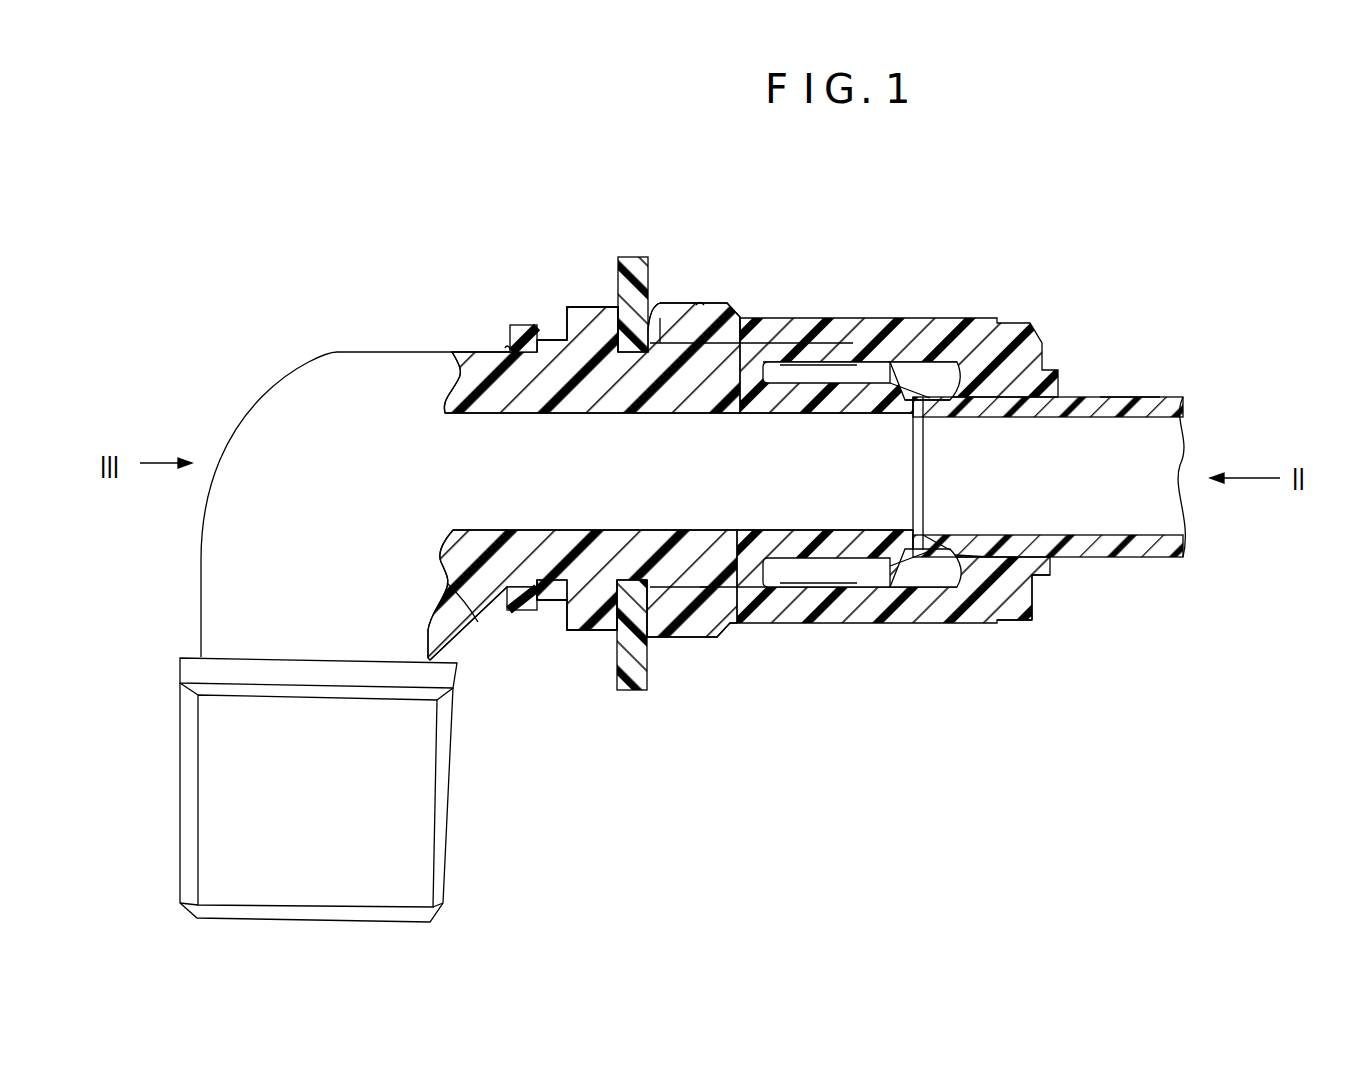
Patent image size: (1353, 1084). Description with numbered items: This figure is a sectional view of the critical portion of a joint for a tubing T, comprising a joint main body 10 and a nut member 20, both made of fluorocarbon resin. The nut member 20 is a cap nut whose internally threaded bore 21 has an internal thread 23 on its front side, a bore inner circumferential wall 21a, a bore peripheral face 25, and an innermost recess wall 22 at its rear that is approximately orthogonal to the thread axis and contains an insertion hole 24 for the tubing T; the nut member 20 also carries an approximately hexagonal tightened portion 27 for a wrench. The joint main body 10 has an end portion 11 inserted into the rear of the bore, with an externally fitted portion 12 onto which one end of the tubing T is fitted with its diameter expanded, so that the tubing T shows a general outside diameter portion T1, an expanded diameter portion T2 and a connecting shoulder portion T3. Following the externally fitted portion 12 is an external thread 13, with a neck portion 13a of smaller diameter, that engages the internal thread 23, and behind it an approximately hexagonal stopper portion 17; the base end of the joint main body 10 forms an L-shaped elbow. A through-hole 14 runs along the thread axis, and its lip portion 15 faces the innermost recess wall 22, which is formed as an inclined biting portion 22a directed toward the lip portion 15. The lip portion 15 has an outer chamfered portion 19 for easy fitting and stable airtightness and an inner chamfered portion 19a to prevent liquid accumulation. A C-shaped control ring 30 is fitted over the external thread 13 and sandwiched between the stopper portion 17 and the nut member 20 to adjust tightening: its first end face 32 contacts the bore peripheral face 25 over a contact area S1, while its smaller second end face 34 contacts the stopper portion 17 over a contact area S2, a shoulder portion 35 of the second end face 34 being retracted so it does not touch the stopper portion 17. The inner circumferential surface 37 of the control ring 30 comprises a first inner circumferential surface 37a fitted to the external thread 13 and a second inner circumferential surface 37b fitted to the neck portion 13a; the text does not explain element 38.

The joint main body 10 is at (443, 310).
The end portion 11 is at (880, 375).
The externally fitted portion 12 is at (835, 372).
The external thread 13 is at (665, 602).
The neck portion 13a is at (585, 345).
The through-hole 14 is at (425, 385).
The lip portion 15 is at (932, 530).
The stopper portion 17 is at (512, 612).
The chamfered portion 19 is at (897, 590).
The chamfered portion 19a is at (912, 532).
The nut member 20 is at (938, 640).
The internally threaded bore 21 is at (845, 588).
The bore inner circumferential wall 21a is at (828, 588).
The innermost recess wall 22 is at (966, 603).
The biting portion 22a is at (970, 548).
The internal thread 23 is at (706, 589).
The insertion hole 24 is at (1033, 620).
The bore peripheral face 25 is at (616, 330).
The tightened portion 27 is at (712, 302).
The control ring 30 is at (628, 245).
The first end face 32 is at (666, 302).
The second end face 34 is at (520, 330).
The shoulder portion 35 is at (545, 345).
The inner circumferential surface 37 is at (550, 602).
The first inner circumferential surface 37a is at (640, 692).
The second inner circumferential surface 37b is at (550, 600).
The lip 38 is at (655, 310).
The contact area S1 is at (702, 302).
The contact area S2 is at (508, 350).
The tubing T is at (1138, 560).
The general outside diameter portion T1 is at (1132, 396).
The expanded diameter portion T2 is at (790, 362).
The shoulder portion T3 is at (940, 384).